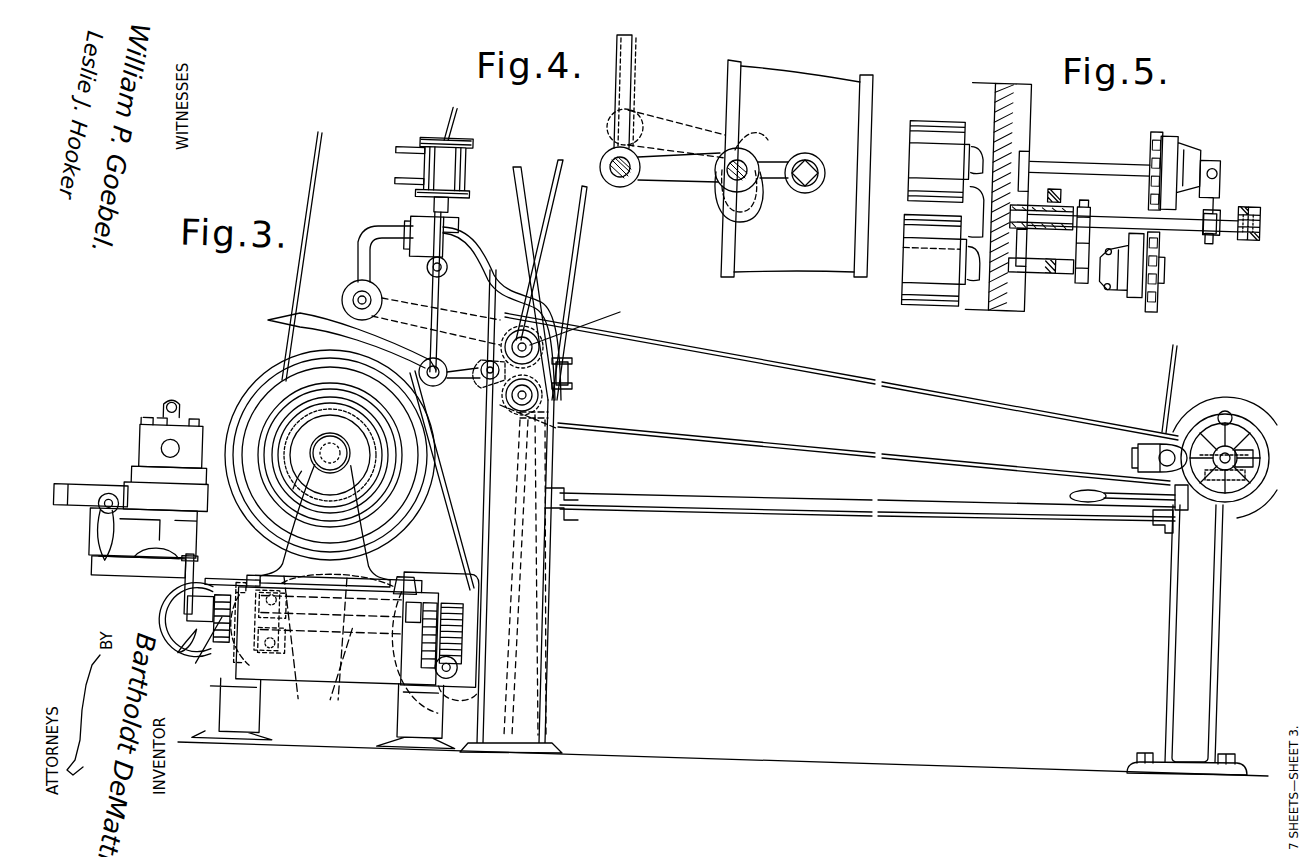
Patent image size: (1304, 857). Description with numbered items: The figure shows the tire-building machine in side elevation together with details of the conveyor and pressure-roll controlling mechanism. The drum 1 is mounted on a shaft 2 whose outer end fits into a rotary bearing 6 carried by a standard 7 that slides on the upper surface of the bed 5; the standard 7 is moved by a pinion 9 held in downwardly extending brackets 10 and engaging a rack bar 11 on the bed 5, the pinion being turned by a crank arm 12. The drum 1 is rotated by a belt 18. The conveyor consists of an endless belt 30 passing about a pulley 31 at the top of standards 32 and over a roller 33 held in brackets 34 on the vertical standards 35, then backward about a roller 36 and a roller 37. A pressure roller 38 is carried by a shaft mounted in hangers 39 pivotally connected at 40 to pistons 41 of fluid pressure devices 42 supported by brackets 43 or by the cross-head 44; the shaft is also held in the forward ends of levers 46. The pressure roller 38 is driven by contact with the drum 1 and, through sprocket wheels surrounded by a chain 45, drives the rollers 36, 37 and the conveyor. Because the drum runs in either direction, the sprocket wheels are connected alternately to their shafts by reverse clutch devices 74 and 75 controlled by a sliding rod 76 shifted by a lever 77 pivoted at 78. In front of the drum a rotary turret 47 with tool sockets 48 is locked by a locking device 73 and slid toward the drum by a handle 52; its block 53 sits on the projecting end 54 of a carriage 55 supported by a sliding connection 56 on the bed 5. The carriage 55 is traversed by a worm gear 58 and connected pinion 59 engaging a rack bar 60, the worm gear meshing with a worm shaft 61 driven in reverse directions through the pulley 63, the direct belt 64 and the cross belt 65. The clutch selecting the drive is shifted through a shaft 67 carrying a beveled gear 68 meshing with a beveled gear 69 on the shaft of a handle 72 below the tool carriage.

In FIG. 3, the drum 1 is at (254, 366).
In FIG. 3, the shaft 2 is at (330, 446).
In FIG. 3, the bed 5 is at (503, 447).
In FIG. 3, the rotary bearing 6 is at (332, 470).
In FIG. 3, the standard 7 is at (327, 525).
In FIG. 3, the pinion 9 is at (207, 635).
In FIG. 3, the brackets 10 is at (228, 575).
In FIG. 3, the rack bar 11 is at (238, 598).
In FIG. 3, the crank arm 12 is at (140, 580).
In FIG. 3, the belt 18 is at (312, 178).
In FIG. 3, the endless belt 30 is at (985, 400).
In FIG. 3, the pulley 31 is at (1150, 440).
In FIG. 3, the standards 32 is at (1187, 640).
In FIG. 3, the roller 33 is at (356, 282).
In FIG. 3, the brackets 34 is at (372, 232).
In FIG. 3, the vertical standards 35 is at (546, 557).
In FIG. 3, the roller 36 is at (592, 335).
In FIG. 5, the roller 36 is at (939, 162).
In FIG. 3, the roller 37 is at (552, 420).
In FIG. 5, the roller 37 is at (906, 262).
In FIG. 3, the pressure roller 38 is at (442, 480).
In FIG. 3, the hangers 39 is at (443, 293).
In FIG. 4, the hangers 39 is at (632, 84).
In FIG. 3, the pivotal connection 40 is at (446, 263).
In FIG. 3, the pistons 41 is at (432, 221).
In FIG. 3, the fluid pressure devices 42 is at (466, 146).
In FIG. 3, the brackets 43 is at (466, 216).
In FIG. 3, the cross-head 44 is at (470, 234).
In FIG. 3, the chain 45 is at (548, 349).
In FIG. 5, the chain 45 is at (1162, 133).
In FIG. 3, the levers 46 is at (493, 356).
In FIG. 4, the levers 46 is at (676, 180).
In FIG. 5, the levers 46 is at (1053, 277).
In FIG. 3, the rotary turret 47 is at (135, 437).
In FIG. 3, the sockets 48 is at (174, 430).
In FIG. 3, the handle 52 is at (96, 541).
In FIG. 3, the block 53 is at (102, 490).
In FIG. 3, the projecting end 54 is at (100, 578).
In FIG. 3, the carriage 55 is at (446, 572).
In FIG. 3, the sliding connection 56 is at (412, 582).
In FIG. 3, the worm gear 58 is at (448, 610).
In FIG. 3, the pinion 59 is at (420, 641).
In FIG. 3, the rack bar 60 is at (425, 610).
In FIG. 3, the worm shaft 61 is at (445, 682).
In FIG. 3, the pulley 63 is at (462, 695).
In FIG. 3, the direct belt 64 is at (580, 273).
In FIG. 3, the cross belt 65 is at (560, 176).
In FIG. 3, the shaft 67 is at (336, 670).
In FIG. 3, the beveled gear 68 is at (257, 637).
In FIG. 3, the beveled gear 69 is at (170, 636).
In FIG. 3, the handle 72 is at (183, 648).
In FIG. 3, the locking device 73 is at (162, 404).
In FIG. 3, the reverse clutch device 74 is at (592, 318).
In FIG. 5, the reverse clutch device 74 is at (1192, 160).
In FIG. 3, the reverse clutch device 75 is at (548, 402).
In FIG. 5, the reverse clutch device 75 is at (1118, 296).
In FIG. 3, the sliding rod 76 is at (497, 345).
In FIG. 4, the sliding rod 76 is at (745, 162).
In FIG. 5, the sliding rod 76 is at (1198, 235).
In FIG. 3, the lever 77 is at (332, 320).
In FIG. 5, the lever 77 is at (1254, 242).
In FIG. 3, the pivot 78 is at (568, 374).